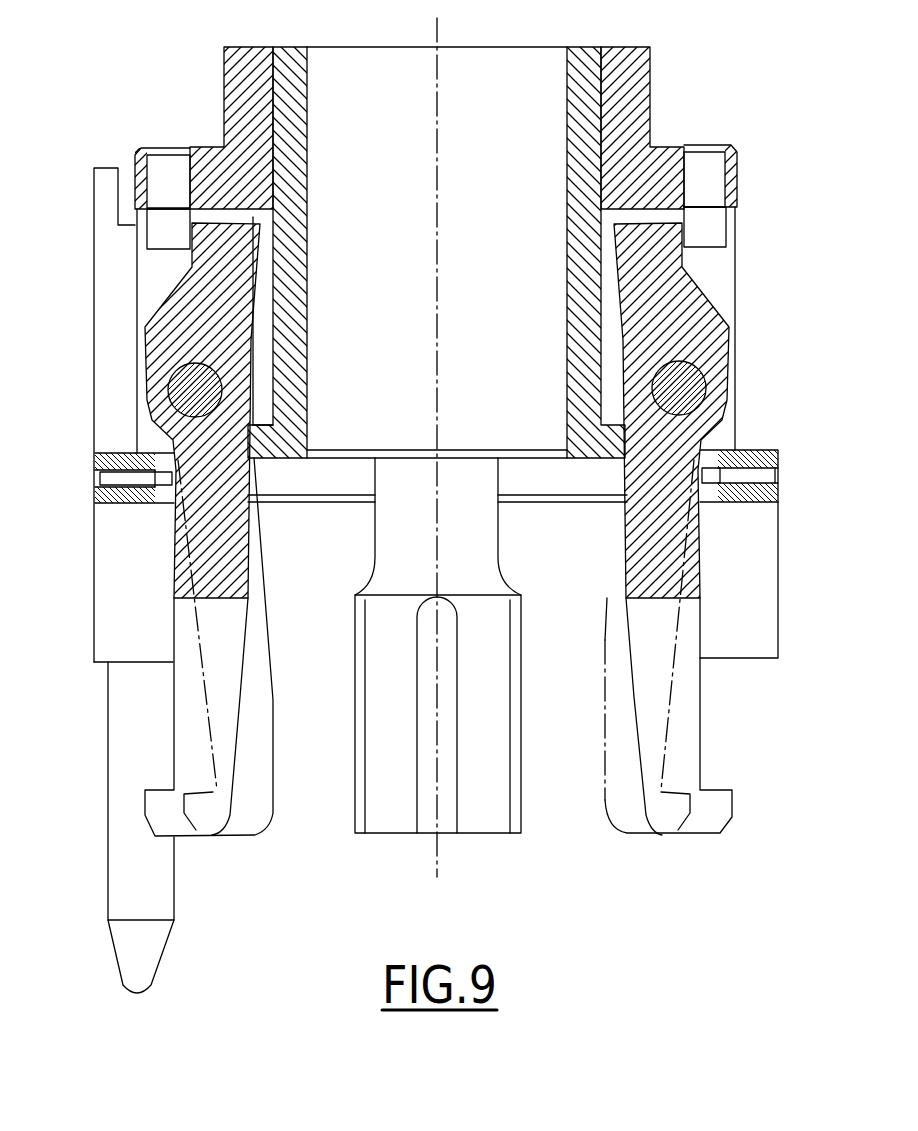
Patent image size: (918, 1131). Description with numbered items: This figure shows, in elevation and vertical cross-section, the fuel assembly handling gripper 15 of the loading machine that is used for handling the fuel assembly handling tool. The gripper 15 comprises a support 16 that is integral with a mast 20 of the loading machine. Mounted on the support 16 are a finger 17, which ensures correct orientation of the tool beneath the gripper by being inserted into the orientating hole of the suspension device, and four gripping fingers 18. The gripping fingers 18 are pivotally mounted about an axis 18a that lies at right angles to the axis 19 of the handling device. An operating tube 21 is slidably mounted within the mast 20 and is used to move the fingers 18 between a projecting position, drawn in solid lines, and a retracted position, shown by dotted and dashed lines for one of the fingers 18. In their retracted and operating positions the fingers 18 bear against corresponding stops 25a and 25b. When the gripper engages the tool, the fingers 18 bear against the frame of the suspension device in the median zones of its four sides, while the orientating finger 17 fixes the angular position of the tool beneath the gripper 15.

The fuel assembly handling gripper 15 is at (766, 291).
The support 16 is at (110, 362).
The orientating finger 17 is at (125, 815).
The gripping fingers 18 is at (190, 648).
The pivot axis 18a is at (193, 393).
The axis of the handling device 19 is at (438, 203).
The mast 20 is at (208, 152).
The operating tube 21 is at (578, 143).
The stop 25a is at (718, 228).
The stop 25b is at (100, 478).